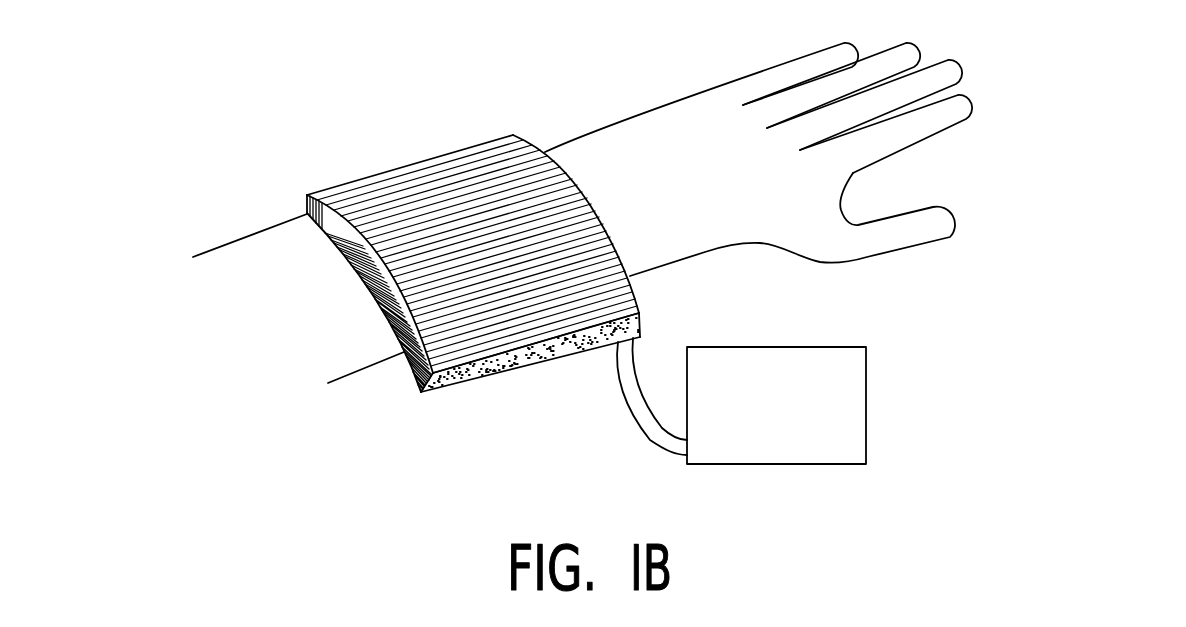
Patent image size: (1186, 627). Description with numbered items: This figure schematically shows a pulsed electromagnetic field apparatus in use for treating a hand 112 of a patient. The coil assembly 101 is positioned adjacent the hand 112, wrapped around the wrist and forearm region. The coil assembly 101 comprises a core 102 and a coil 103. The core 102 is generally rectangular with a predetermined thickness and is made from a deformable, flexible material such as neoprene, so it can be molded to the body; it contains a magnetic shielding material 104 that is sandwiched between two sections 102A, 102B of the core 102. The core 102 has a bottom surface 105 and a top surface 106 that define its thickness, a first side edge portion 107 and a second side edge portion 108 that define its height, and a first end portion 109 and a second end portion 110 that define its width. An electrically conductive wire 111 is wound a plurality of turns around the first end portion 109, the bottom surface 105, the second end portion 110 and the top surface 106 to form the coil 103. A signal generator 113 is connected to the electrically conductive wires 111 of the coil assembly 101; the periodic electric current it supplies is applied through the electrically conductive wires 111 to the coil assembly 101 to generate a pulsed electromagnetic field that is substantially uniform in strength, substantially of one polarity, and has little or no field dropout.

The coil assembly 101 is at (360, 187).
The core 102 is at (440, 388).
The first section of the core 102A is at (592, 349).
The second section of the core 102B is at (564, 356).
The coil 103 is at (563, 170).
The magnetic shielding material 104 is at (421, 391).
The bottom surface 105 is at (479, 381).
The top surface 106 is at (477, 152).
The first side edge portion 107 is at (407, 164).
The second side edge portion 108 is at (534, 362).
The first end portion 109 is at (380, 292).
The second end portion 110 is at (598, 213).
The electrically conductive wire 111 is at (636, 355).
The hand 112 is at (643, 104).
The signal generator 113 is at (866, 408).